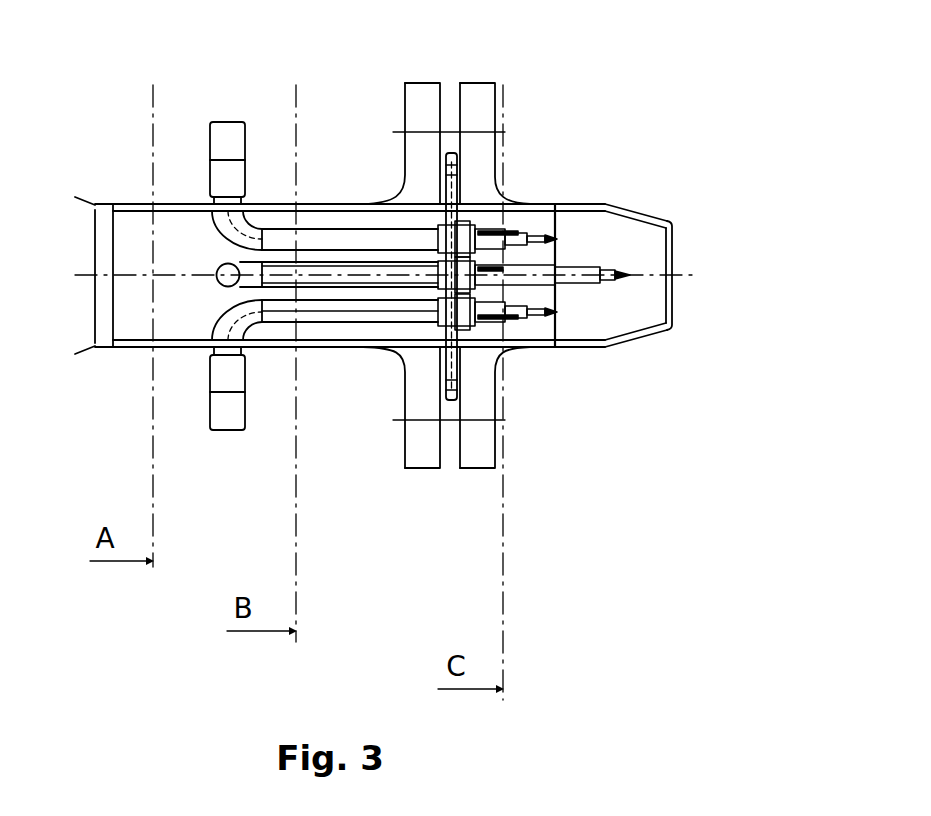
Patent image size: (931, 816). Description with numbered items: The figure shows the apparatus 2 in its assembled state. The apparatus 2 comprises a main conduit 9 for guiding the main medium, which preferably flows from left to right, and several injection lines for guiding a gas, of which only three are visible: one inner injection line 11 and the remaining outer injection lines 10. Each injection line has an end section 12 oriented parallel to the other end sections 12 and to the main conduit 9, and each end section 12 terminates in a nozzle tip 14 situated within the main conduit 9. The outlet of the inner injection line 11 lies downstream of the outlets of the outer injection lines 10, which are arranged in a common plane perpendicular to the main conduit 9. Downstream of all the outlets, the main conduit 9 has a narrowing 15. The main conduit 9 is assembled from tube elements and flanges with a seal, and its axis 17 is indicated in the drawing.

The apparatus 2 is at (701, 60).
The main conduit 9 is at (610, 207).
The outer injection lines 10 is at (244, 130).
The inner injection line 11 is at (223, 290).
The end sections 12 is at (350, 240).
The nozzle tips 14 is at (518, 228).
The narrowing 15 is at (660, 337).
The axis 17 is at (192, 270).